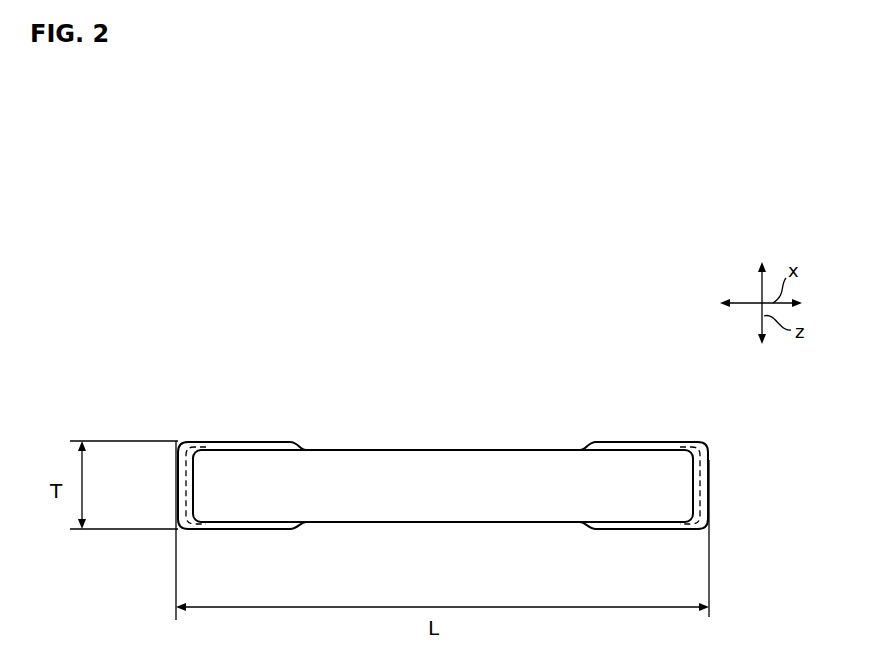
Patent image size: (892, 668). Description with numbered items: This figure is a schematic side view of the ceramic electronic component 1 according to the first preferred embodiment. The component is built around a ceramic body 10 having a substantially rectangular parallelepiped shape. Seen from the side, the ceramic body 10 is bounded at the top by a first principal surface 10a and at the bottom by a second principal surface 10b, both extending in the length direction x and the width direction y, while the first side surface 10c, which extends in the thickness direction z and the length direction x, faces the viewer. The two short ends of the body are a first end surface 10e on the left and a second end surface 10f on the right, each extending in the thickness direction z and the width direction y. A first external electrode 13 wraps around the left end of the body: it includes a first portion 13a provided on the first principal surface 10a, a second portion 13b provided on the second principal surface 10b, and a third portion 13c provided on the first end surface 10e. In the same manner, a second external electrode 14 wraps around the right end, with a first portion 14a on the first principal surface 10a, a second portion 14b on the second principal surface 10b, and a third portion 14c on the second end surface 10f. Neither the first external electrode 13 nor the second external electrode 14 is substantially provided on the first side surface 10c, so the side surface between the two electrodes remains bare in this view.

The ceramic electronic component 1 is at (606, 388).
The ceramic body 10 is at (506, 531).
The first principal surface 10a is at (458, 449).
The second principal surface 10b is at (447, 524).
The first side surface 10c is at (383, 508).
The first end surface 10e is at (178, 498).
The second end surface 10f is at (708, 505).
The first external electrode 13 is at (279, 541).
The first portion of first external electrode 13a is at (258, 441).
The second portion of first external electrode 13b is at (237, 531).
The third portion of first external electrode 13c is at (178, 460).
The second external electrode 14 is at (620, 539).
The first portion of second external electrode 14a is at (656, 442).
The second portion of second external electrode 14b is at (672, 531).
The third portion of second external electrode 14c is at (710, 468).